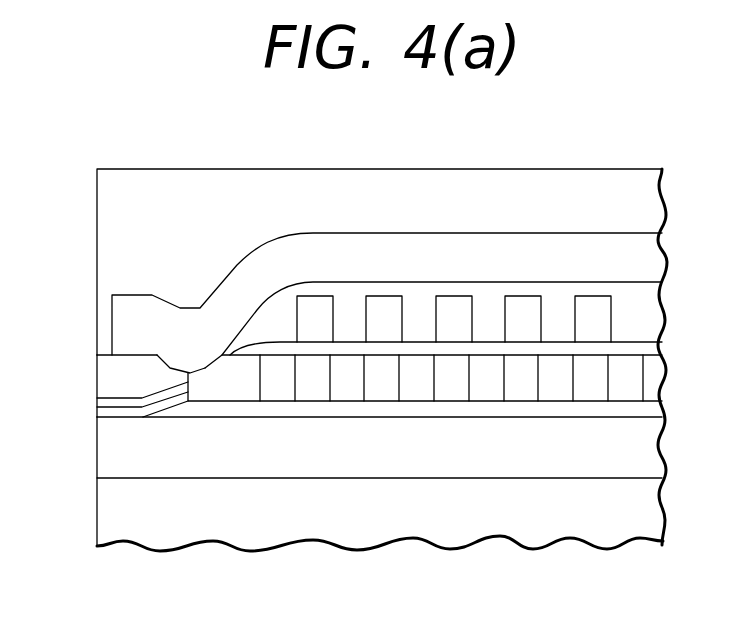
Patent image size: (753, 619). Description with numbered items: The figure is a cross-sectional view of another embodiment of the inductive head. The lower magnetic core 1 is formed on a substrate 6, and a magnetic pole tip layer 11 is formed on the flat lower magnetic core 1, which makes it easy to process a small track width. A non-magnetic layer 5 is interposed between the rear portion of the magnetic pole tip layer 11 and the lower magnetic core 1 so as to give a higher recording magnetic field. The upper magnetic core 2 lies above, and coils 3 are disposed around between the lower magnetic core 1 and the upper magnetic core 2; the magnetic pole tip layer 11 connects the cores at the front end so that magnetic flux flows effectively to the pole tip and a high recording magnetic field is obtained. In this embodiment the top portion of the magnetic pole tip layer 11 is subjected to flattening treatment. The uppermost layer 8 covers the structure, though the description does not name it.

The upper cladding / overcoat layer 8 is at (160, 181).
The upper magnetic core 2 is at (650, 258).
The coils 3 is at (675, 398).
The non-magnetic layer 5 is at (248, 408).
The magnetic pole tip layer 11 is at (87, 355).
The lower magnetic core 1 is at (107, 458).
The substrate 6 is at (107, 513).